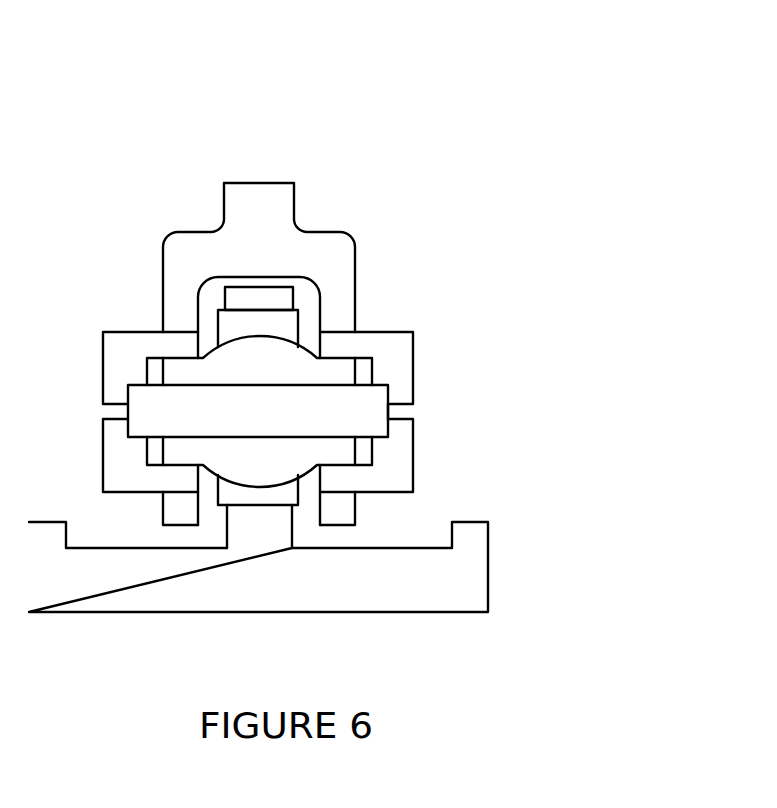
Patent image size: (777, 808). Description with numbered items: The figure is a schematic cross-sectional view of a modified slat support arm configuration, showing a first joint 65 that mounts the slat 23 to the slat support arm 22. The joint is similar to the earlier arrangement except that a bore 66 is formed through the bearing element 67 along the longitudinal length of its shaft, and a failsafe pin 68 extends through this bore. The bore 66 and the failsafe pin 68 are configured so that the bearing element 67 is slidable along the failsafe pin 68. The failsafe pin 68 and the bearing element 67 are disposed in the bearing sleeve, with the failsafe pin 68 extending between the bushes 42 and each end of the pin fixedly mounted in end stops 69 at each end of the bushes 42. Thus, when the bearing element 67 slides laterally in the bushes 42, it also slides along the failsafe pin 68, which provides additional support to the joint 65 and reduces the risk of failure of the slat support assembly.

The first joint 65 is at (423, 146).
The slat support arm 22 is at (277, 212).
The bushes 42 is at (392, 333).
The failsafe pin 68 is at (155, 417).
The bore 66 is at (343, 385).
The bearing element 67 is at (342, 451).
The end stops 69 is at (403, 428).
The slat 23 is at (434, 588).